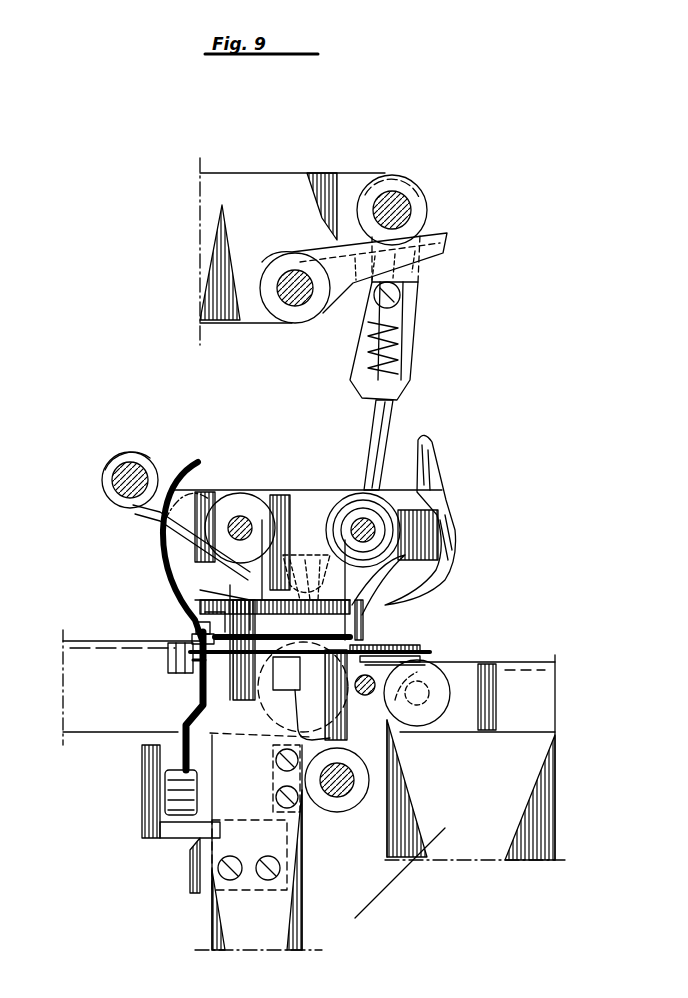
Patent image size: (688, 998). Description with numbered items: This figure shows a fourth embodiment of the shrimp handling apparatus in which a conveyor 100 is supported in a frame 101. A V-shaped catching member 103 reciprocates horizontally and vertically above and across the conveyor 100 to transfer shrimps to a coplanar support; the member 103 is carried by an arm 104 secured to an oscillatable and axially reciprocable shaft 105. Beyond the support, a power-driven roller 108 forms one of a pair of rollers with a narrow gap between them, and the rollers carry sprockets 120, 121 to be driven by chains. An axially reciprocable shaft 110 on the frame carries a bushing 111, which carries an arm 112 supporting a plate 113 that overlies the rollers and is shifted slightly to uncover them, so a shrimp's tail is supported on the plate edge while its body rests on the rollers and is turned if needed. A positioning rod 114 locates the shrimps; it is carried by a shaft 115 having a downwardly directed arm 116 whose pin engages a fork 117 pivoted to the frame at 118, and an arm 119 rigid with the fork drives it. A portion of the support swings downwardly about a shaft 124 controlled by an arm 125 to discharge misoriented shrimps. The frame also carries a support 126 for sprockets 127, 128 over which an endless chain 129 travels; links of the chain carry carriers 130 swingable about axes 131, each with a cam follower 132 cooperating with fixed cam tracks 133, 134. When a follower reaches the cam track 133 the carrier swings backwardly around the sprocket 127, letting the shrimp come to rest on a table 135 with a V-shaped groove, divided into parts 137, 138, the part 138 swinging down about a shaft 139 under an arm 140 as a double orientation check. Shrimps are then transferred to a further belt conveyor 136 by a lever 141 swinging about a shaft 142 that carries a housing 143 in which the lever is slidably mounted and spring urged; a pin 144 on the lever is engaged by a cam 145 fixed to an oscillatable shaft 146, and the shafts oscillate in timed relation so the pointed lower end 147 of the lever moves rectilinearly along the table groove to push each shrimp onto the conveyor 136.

The conveyor 100 is at (78, 640).
The frame 101 is at (262, 935).
The V-shaped catching member 103 is at (243, 507).
The arm 104 is at (134, 512).
The shaft 105 is at (104, 480).
The roller 108 is at (195, 700).
The shaft 110 is at (345, 812).
The bushing 111 is at (300, 808).
The arm 112 is at (178, 730).
The plate 113 is at (262, 520).
The positioning rod 114 is at (213, 610).
The shaft 115 is at (195, 625).
The arm 116 is at (193, 640).
The fork 117 is at (182, 752).
The pivot 118 is at (178, 797).
The arm 119 is at (192, 878).
The sprocket 120 is at (167, 663).
The sprocket 121 is at (193, 678).
The shaft 124 is at (348, 700).
The arm 125 is at (363, 694).
The support 126 is at (243, 593).
The sprocket 127 is at (377, 505).
The sprocket 128 is at (228, 510).
The endless chain 129 is at (306, 600).
The carrier 130 is at (340, 600).
The axis 131 is at (327, 613).
The cam follower 132 is at (364, 630).
The cam track 133 is at (450, 573).
The cam track 134 is at (158, 540).
The table 135 is at (418, 660).
The belt conveyor 136 is at (525, 662).
The table part 137 is at (415, 650).
The table part 138 is at (392, 654).
The shaft 139 is at (450, 670).
The arm 140 is at (435, 723).
The lever 141 is at (373, 421).
The shaft 142 is at (415, 192).
The housing 143 is at (410, 343).
The pin 144 is at (400, 296).
The cam 145 is at (445, 245).
The oscillatable shaft 146 is at (291, 323).
The lower end of lever 147 is at (366, 602).